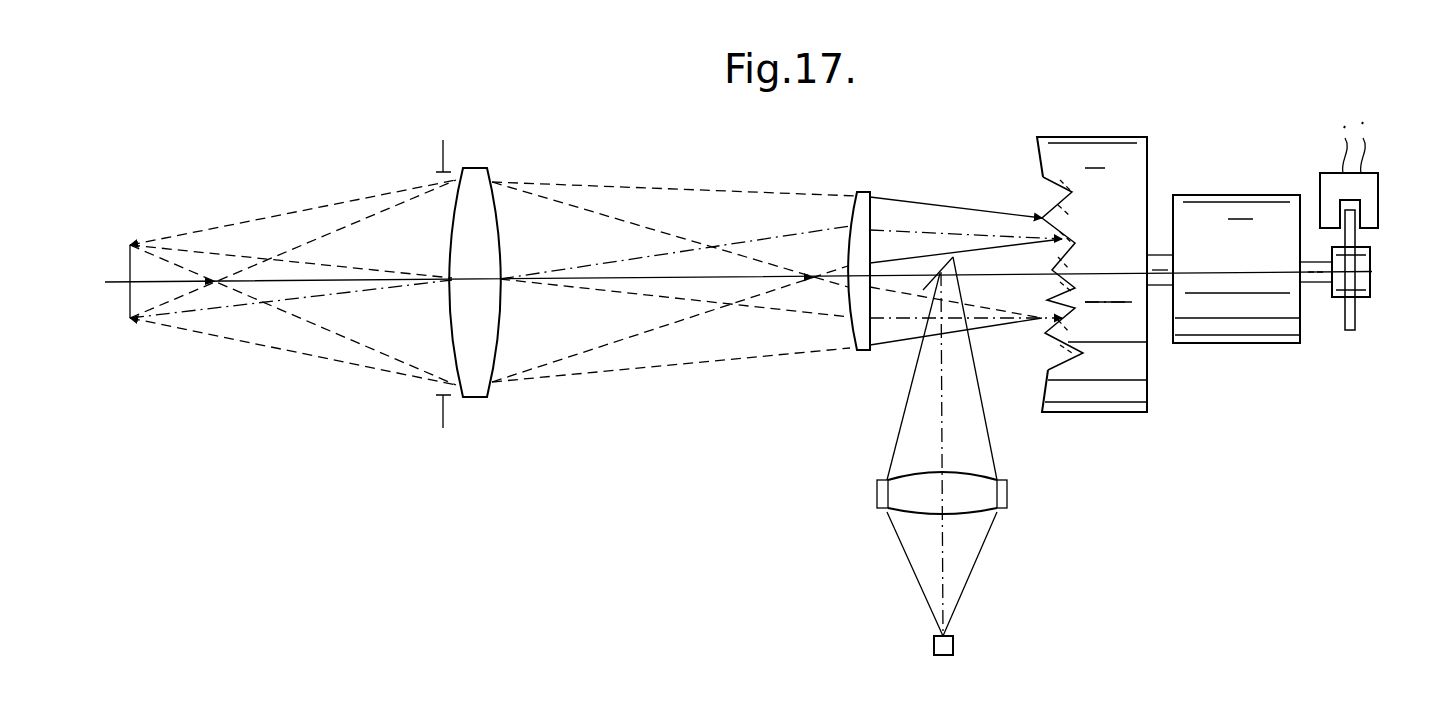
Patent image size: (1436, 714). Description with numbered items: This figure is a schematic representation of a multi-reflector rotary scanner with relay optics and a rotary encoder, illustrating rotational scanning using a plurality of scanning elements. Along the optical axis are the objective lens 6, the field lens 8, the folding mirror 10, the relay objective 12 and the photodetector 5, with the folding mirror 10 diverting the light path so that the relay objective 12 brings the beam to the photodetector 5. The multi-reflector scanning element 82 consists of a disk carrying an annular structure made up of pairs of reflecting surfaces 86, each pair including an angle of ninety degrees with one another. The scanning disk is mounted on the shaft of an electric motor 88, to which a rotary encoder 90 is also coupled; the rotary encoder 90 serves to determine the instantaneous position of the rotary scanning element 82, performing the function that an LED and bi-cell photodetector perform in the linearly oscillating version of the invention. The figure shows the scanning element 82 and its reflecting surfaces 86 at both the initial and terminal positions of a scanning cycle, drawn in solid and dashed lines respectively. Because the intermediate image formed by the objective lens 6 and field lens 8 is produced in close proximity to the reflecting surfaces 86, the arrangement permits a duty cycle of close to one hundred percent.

The photodetector 5 is at (953, 645).
The objective lens 6 is at (476, 166).
The field lens 8 is at (862, 353).
The folding mirror 10 is at (940, 272).
The relay objective 12 is at (877, 488).
The multi-reflector scanning element 82 is at (1103, 118).
The reflecting surfaces 86 is at (1040, 190).
The electric motor 88 is at (1237, 322).
The rotary encoder 90 is at (1383, 256).